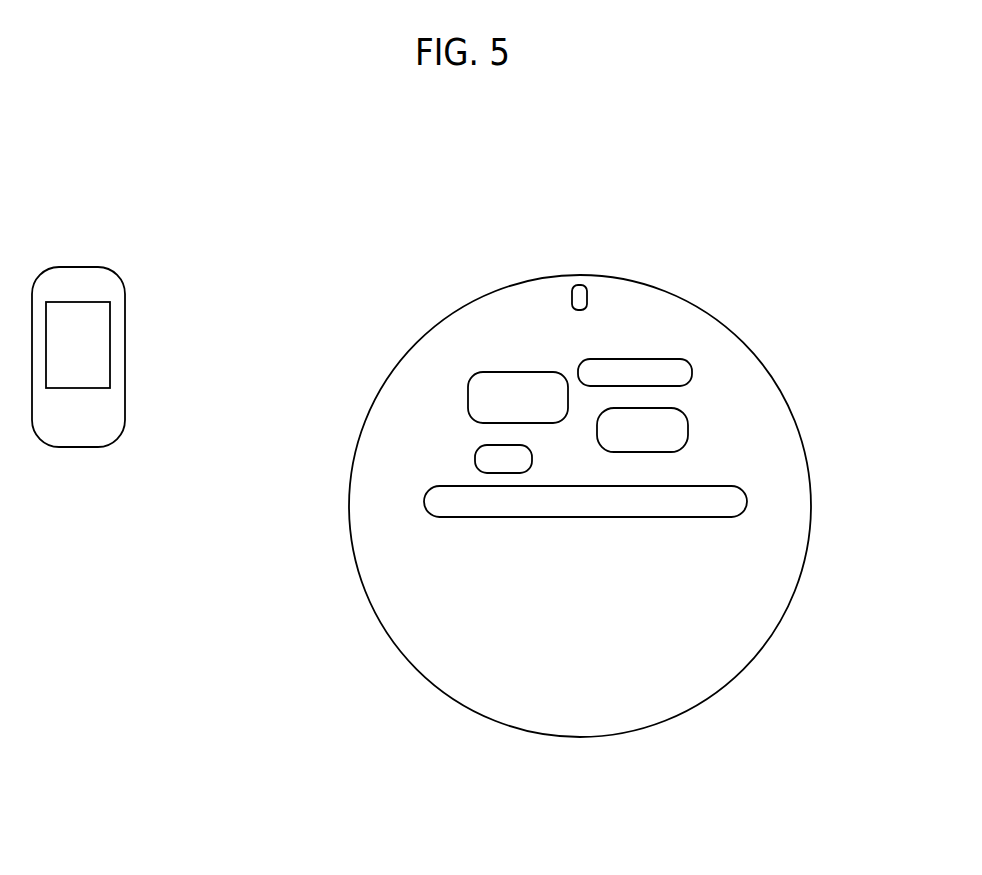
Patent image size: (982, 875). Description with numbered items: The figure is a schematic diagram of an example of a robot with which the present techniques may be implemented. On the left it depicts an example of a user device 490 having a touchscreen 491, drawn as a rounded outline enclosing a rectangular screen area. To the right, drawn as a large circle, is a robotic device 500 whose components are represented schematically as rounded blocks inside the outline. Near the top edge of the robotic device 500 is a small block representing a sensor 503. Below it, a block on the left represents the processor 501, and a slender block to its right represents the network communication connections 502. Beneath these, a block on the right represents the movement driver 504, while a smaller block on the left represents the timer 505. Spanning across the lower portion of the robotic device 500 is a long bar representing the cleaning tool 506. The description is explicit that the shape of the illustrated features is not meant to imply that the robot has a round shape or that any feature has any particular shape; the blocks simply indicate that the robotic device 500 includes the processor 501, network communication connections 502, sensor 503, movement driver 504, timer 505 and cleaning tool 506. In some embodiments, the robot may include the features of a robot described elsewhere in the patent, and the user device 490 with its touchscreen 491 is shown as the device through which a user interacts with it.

The user device 490 is at (123, 420).
The touchscreen 491 is at (110, 343).
The robotic device 500 is at (785, 613).
The processor 501 is at (495, 371).
The network communication connections 502 is at (660, 348).
The sensor 503 is at (588, 292).
The movement driver 504 is at (688, 427).
The timer 505 is at (530, 468).
The cleaning tool 506 is at (438, 485).